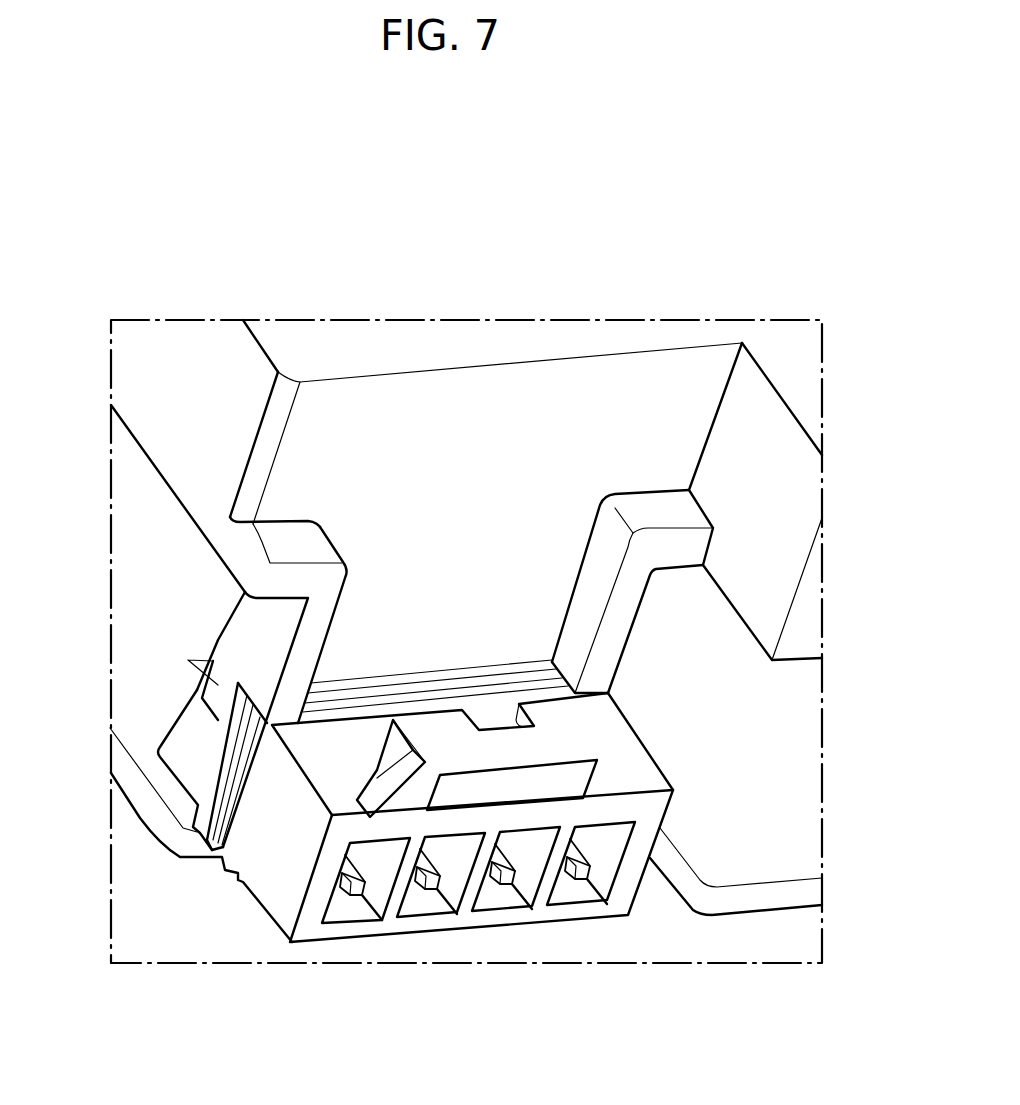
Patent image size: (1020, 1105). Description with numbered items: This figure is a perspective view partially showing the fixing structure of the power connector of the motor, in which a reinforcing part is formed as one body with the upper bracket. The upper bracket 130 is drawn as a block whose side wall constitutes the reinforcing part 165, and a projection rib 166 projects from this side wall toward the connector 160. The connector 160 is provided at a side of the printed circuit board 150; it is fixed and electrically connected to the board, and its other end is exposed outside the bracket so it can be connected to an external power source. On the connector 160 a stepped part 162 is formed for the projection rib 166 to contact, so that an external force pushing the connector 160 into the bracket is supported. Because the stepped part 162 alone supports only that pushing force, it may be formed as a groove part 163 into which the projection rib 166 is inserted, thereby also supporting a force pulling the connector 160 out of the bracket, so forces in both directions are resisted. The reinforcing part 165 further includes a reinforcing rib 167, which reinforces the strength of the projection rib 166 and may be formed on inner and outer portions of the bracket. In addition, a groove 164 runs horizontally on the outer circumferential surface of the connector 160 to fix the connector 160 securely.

The upper bracket 130 is at (330, 338).
The printed circuit board 150 is at (750, 862).
The connector 160 is at (280, 890).
The stepped part 162 is at (227, 708).
The groove part 163 is at (220, 722).
The groove 164 is at (224, 775).
The reinforcing part 165 is at (252, 638).
The projection rib 166 is at (217, 683).
The reinforcing rib 167 is at (612, 640).